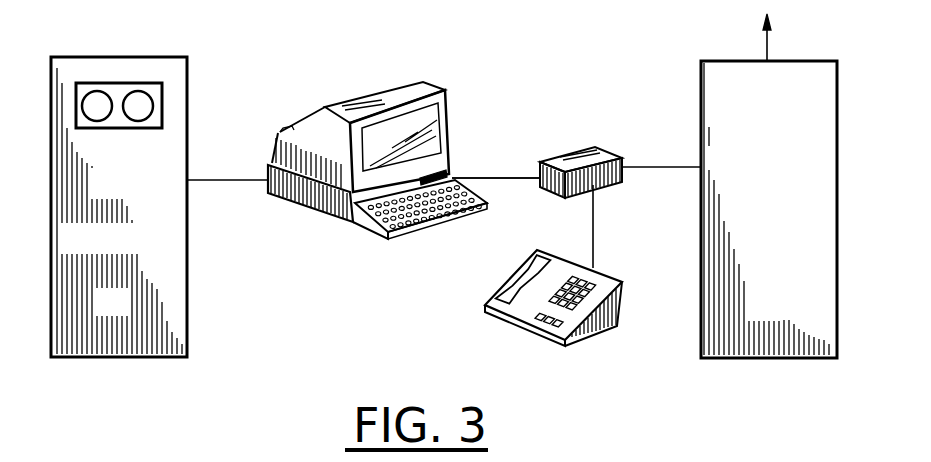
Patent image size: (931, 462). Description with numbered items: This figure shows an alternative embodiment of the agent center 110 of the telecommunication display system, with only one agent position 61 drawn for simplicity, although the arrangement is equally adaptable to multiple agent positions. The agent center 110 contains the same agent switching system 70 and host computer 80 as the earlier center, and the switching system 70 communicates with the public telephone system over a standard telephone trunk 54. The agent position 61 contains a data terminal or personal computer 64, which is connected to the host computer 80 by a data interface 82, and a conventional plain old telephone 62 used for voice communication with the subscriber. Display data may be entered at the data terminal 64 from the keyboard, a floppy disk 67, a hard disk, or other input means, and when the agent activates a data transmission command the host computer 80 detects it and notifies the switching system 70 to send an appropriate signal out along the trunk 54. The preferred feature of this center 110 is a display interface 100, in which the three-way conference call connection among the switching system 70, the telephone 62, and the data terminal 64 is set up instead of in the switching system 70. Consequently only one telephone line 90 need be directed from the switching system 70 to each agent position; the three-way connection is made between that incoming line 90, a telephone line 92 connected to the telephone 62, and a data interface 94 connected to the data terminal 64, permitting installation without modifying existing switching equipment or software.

The host computer 80 is at (131, 314).
The data interface 82 is at (245, 180).
The agent center 110 is at (400, 287).
The data terminal 64 is at (361, 106).
The floppy disk 67 is at (452, 150).
The agent position 61 is at (509, 164).
The data interface 94 is at (505, 179).
The display interface 100 is at (572, 148).
The telephone line 90 is at (680, 167).
The telephone line 92 is at (596, 219).
The telephone 62 is at (510, 280).
The switching system 70 is at (780, 319).
The telephone trunk 54 is at (767, 43).